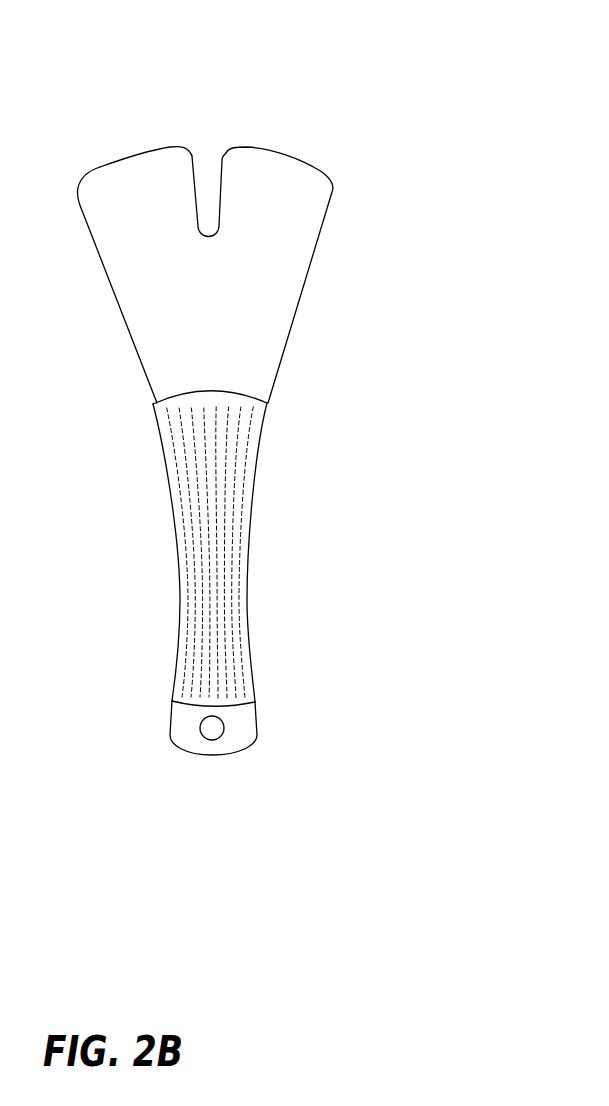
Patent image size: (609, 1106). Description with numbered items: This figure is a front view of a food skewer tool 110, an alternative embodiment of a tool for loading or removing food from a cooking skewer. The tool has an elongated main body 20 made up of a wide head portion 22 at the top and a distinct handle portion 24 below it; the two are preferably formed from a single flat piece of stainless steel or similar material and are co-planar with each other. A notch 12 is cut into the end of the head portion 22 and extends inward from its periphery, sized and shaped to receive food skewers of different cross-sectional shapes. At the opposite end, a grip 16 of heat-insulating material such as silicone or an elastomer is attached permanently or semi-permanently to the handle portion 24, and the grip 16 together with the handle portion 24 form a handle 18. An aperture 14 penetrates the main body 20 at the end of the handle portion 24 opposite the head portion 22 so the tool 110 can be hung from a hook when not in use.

The food skewer tool 110 is at (52, 33).
The notch 12 is at (207, 140).
The head portion 22 is at (107, 227).
The main body 20 is at (410, 336).
The grip 16 is at (195, 508).
The handle 18 is at (408, 537).
The handle portion 24 is at (182, 715).
The aperture 14 is at (231, 727).